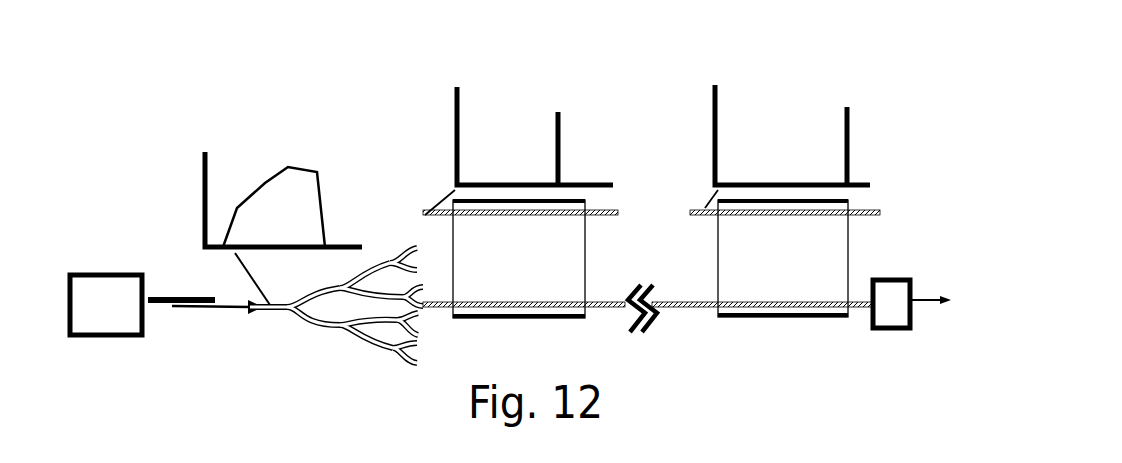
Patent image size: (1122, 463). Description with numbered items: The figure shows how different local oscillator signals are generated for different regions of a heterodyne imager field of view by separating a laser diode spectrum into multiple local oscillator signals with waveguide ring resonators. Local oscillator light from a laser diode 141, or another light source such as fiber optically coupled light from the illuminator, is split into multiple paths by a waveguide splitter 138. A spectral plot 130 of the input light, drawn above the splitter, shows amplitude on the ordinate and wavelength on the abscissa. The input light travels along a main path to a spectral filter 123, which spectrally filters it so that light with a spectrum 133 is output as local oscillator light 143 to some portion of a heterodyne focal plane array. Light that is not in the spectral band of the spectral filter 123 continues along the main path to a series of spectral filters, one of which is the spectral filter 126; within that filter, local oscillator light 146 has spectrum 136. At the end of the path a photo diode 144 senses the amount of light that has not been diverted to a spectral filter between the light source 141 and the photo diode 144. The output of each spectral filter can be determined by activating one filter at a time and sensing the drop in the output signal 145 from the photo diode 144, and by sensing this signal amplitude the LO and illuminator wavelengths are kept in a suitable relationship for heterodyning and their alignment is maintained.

The spectral plot 130 is at (203, 212).
The laser diode 141 is at (115, 335).
The waveguide splitter 138 is at (315, 327).
The local oscillator light 143 is at (423, 212).
The spectrum 133 is at (463, 112).
The spectral filter 123 is at (585, 233).
The local oscillator light 146 is at (687, 208).
The spectrum 136 is at (747, 85).
The spectral filter 126 is at (848, 240).
The photo diode 144 is at (880, 328).
The output signal 145 is at (923, 305).